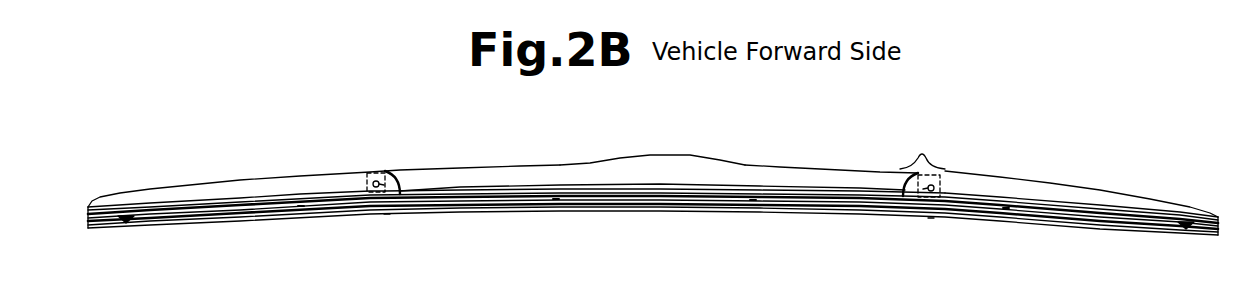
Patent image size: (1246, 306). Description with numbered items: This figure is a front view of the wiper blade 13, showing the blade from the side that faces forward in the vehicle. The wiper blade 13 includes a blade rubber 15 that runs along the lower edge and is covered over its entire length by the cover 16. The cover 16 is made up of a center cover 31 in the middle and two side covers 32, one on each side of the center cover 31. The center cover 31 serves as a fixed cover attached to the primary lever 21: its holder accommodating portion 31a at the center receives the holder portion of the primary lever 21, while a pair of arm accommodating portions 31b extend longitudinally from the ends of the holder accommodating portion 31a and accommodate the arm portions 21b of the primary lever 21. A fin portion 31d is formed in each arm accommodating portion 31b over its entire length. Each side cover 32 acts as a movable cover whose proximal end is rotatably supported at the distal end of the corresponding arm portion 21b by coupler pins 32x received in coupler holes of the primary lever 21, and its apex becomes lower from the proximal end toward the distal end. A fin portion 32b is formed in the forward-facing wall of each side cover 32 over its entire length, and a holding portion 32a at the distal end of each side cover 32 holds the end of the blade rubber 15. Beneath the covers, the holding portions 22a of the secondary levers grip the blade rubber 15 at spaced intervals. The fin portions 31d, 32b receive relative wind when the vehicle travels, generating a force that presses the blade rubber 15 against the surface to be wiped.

The wiper blade 13 is at (1005, 98).
The blade rubber 15 is at (217, 224).
The cover 16 is at (340, 170).
The primary lever 21 is at (689, 143).
The arm portion 21b is at (371, 172).
The holding portion 22a is at (301, 214).
The center cover 31 is at (763, 165).
The holder accommodating portion 31a is at (673, 174).
The arm accommodating portion 31b is at (491, 212).
The fin portion 31d is at (498, 175).
The side cover 32 is at (1047, 166).
The holding portion 32a is at (126, 223).
The fin portion 32b is at (290, 185).
The coupler pin 32x is at (386, 215).